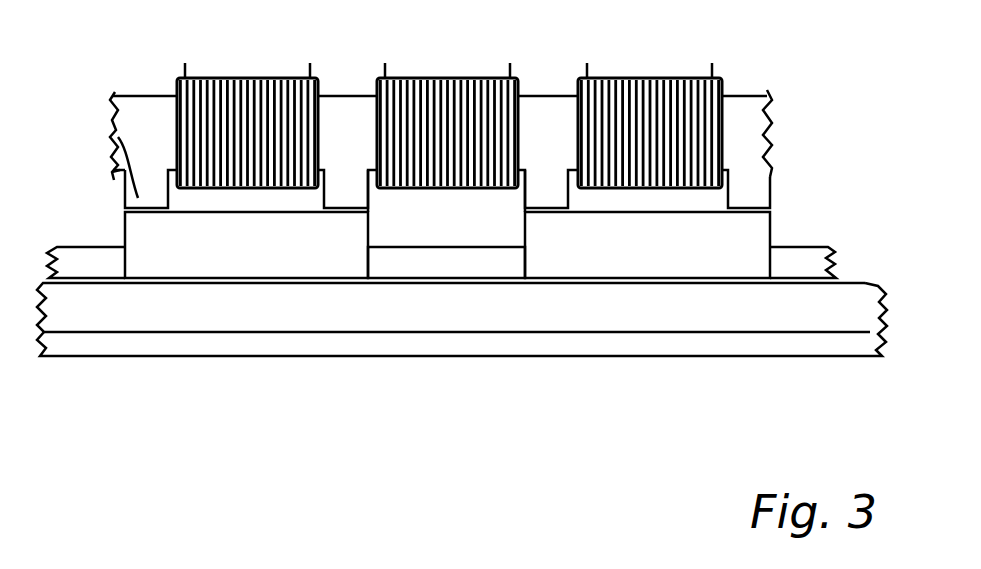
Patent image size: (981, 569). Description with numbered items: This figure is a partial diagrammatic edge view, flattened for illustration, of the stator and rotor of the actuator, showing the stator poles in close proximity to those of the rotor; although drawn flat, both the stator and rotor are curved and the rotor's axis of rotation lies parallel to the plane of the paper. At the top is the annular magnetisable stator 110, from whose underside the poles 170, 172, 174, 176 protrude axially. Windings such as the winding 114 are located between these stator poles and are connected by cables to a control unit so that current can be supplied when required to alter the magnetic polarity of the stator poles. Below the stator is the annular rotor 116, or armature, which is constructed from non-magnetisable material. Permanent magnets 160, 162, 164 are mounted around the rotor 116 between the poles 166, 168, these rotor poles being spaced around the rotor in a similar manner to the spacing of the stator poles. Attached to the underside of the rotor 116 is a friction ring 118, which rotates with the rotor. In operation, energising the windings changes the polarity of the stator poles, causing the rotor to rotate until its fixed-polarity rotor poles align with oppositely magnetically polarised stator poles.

The annular magnetisable stator 110 is at (134, 97).
The winding 114 is at (652, 80).
The annular rotor 116 is at (320, 310).
The friction ring 118 is at (508, 343).
The permanent magnet 160 is at (82, 268).
The permanent magnet 162 is at (435, 267).
The permanent magnet 164 is at (123, 235).
The pole 166 is at (281, 267).
The pole 168 is at (687, 264).
The stator pole 170 is at (110, 131).
The stator pole 172 is at (344, 186).
The stator pole 174 is at (544, 186).
The stator pole 176 is at (750, 188).